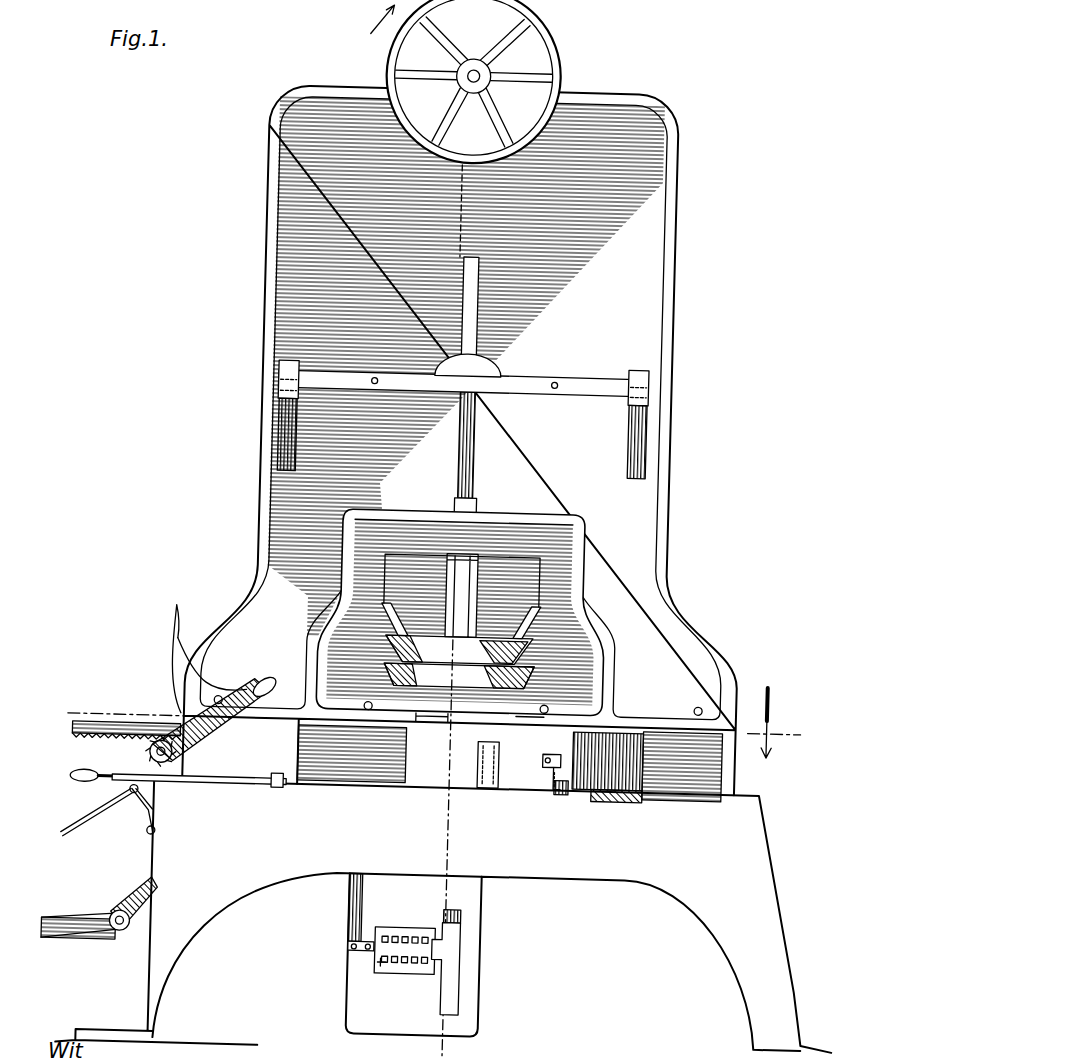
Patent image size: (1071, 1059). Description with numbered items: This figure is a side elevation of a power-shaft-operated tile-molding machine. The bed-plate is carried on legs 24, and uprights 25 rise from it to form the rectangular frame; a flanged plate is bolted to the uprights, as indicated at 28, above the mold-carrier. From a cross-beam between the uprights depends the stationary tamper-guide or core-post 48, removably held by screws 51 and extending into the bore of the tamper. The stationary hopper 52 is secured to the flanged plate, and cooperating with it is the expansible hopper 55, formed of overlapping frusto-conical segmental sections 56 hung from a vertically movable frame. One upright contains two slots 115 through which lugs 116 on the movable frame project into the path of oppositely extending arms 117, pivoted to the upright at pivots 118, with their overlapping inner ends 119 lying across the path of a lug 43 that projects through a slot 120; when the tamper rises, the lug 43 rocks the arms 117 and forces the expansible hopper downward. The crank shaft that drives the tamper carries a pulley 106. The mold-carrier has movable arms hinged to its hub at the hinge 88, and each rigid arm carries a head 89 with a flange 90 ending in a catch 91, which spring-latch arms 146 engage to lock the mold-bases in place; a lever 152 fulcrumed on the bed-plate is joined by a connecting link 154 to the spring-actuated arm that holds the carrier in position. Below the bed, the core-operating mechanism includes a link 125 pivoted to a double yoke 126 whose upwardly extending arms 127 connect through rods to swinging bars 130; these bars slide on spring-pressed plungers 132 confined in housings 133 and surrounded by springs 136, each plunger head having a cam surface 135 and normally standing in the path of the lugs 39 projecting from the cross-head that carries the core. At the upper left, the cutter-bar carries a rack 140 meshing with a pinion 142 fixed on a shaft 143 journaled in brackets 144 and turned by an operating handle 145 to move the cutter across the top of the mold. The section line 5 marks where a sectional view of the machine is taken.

The pulley 106 is at (541, 66).
The uprights 25 is at (467, 439).
The lugs 116 is at (293, 370).
The pivots 118 is at (372, 380).
The arms 117 is at (394, 396).
The overlapping inner ends 119 is at (488, 392).
The slots 115 is at (294, 450).
The slot 120 is at (472, 446).
The lug 43 is at (462, 593).
The tamper-guide or core-post 48 is at (540, 570).
The screws 51 is at (390, 620).
The segmental sections 56 is at (388, 640).
The expansible hopper 55 is at (459, 650).
The stationary hopper 52 is at (547, 667).
The bolts 28 is at (706, 702).
The section line 5 is at (446, 715).
The legs 24 is at (745, 996).
The flange 90 is at (665, 770).
The head 89 is at (628, 790).
The catch 91 is at (572, 792).
The hinge 88 is at (492, 788).
The spring-latch arms 146 is at (556, 772).
The rack 140 is at (128, 738).
The shaft 143 is at (153, 762).
The brackets 144 is at (182, 762).
The operating handle 145 is at (200, 659).
The pinion 142 is at (105, 789).
The lever 152 is at (200, 792).
The connecting link 154 is at (282, 794).
The double yoke 126 is at (140, 800).
The link 125 is at (96, 823).
The arms 127 is at (126, 918).
The swinging bars 130 is at (357, 912).
The plungers 132 is at (362, 950).
The housings 133 is at (398, 978).
The springs 136 is at (386, 966).
The lugs 39 is at (471, 917).
The cam surface 135 is at (471, 952).